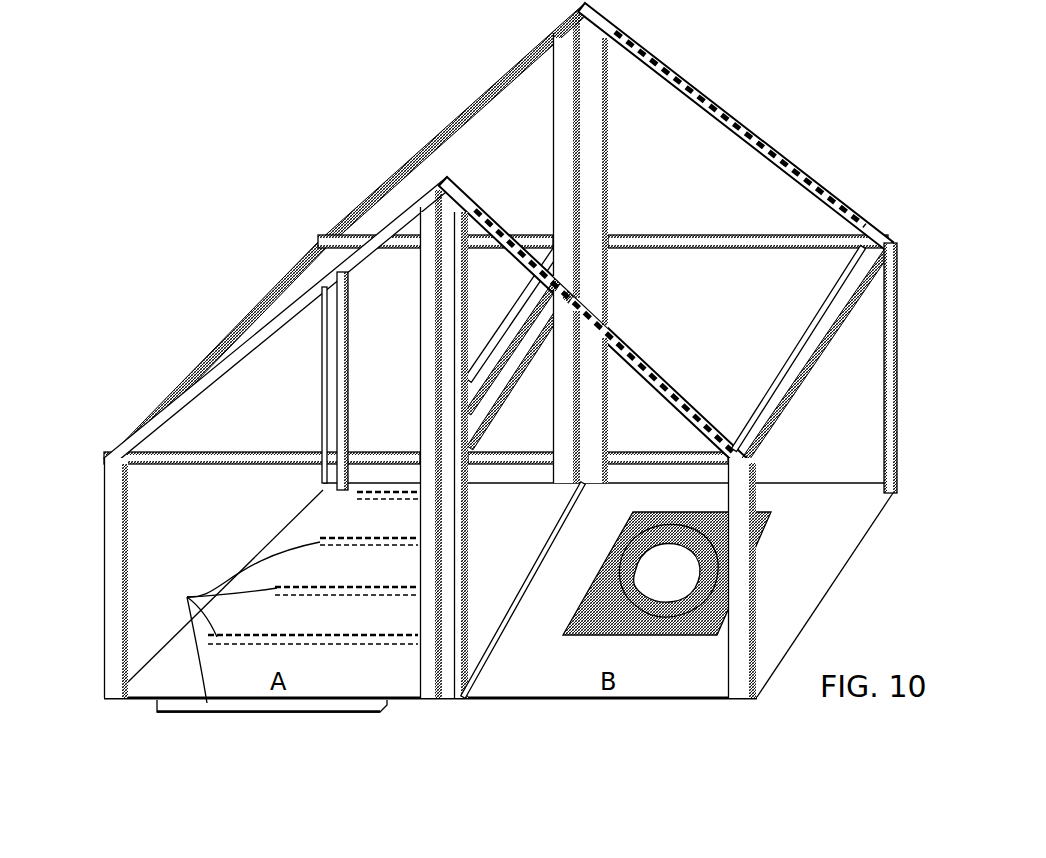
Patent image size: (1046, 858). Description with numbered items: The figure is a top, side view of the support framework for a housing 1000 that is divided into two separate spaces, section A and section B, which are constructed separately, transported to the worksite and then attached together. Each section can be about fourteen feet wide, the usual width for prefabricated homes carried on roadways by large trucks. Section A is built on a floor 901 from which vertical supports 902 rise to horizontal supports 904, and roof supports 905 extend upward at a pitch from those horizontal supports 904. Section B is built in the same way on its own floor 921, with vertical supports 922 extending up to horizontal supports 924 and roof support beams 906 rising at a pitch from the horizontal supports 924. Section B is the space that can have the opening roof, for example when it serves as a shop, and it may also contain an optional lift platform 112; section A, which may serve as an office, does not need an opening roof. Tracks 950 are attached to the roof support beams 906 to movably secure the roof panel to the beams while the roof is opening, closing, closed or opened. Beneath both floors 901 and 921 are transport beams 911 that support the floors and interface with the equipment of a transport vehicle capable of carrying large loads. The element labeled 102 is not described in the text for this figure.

The housing 1000 is at (232, 158).
The base 102 is at (224, 727).
The lift platform 112 is at (640, 630).
The floor 901 is at (335, 497).
The vertical supports 902 is at (553, 112).
The horizontal supports 904 is at (540, 235).
The roof supports 905 is at (456, 120).
The roof support beams 906 is at (872, 232).
The transport beams 911 is at (229, 622).
The floor 921 is at (858, 537).
The vertical supports 922 is at (608, 112).
The horizontal supports 924 is at (694, 242).
The tracks 950 is at (733, 100).